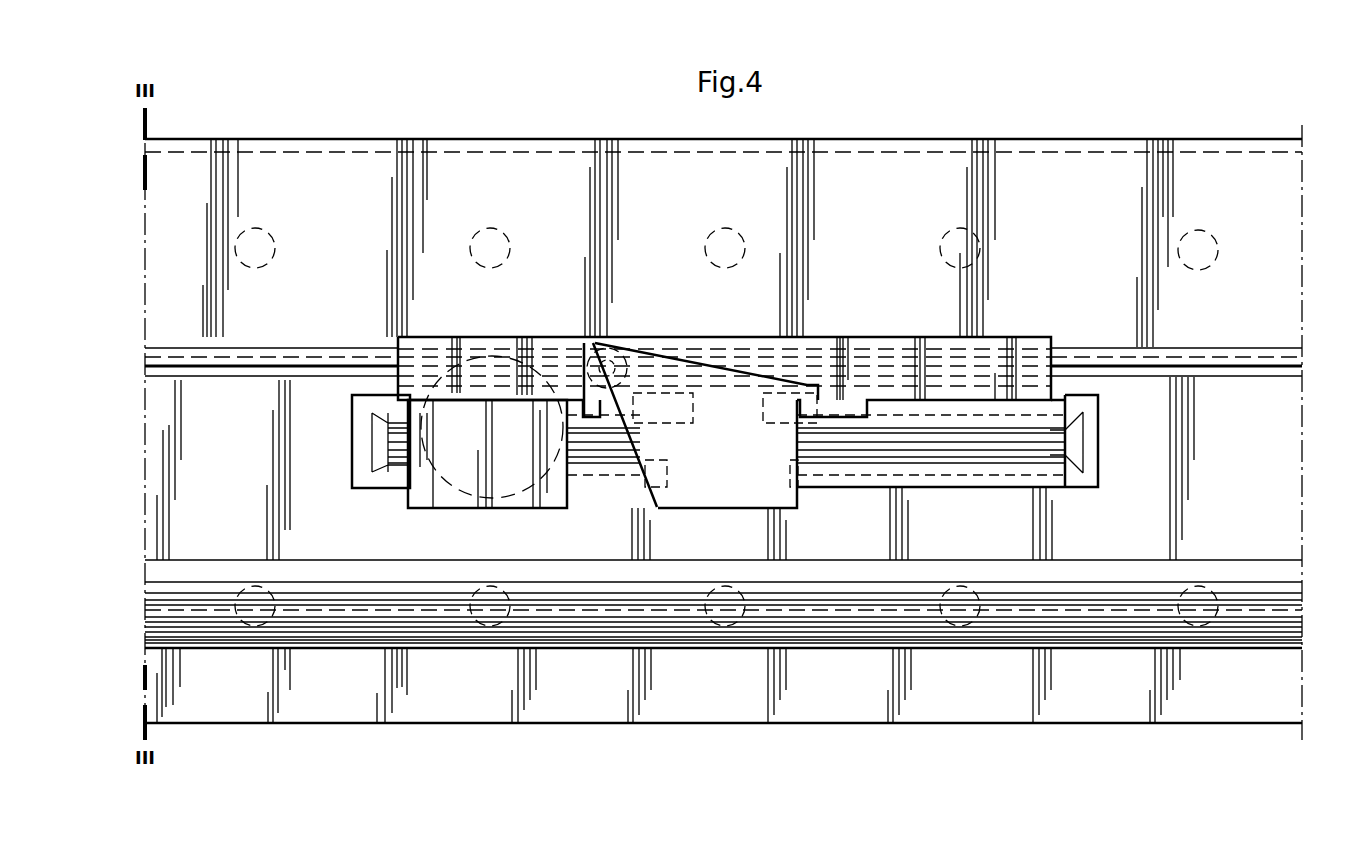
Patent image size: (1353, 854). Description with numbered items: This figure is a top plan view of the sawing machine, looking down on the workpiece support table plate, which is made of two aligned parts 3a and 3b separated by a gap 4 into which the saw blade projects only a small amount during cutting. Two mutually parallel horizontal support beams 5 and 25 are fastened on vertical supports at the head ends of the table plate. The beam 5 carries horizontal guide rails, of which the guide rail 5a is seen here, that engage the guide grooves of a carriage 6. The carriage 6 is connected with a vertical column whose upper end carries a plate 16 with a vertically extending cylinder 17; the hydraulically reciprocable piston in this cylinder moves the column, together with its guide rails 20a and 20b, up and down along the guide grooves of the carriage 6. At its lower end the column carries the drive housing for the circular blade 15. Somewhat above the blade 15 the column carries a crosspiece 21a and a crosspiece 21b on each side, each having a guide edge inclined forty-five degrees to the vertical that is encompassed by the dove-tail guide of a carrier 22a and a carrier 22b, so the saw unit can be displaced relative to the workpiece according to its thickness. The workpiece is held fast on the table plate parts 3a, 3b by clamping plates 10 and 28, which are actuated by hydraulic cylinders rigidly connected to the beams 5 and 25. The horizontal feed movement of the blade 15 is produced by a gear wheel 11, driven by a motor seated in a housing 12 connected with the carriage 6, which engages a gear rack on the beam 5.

The table plate part 3a is at (358, 182).
The table plate part 3b is at (335, 550).
The gap 4 is at (221, 372).
The horizontal support beam 5 is at (262, 167).
The horizontal guide rail 5a is at (1110, 357).
The carriage 6 is at (938, 368).
The clamping plate 10 is at (268, 240).
The gear wheel 11 is at (500, 487).
The housing 12 is at (434, 487).
The circular blade 15 is at (846, 362).
The plate 16 is at (720, 485).
The cylinder 17 is at (588, 345).
The guide rail 20a is at (648, 388).
The guide rail 20b is at (805, 385).
The crosspiece 21a is at (402, 442).
The crosspiece 21b is at (1048, 438).
The carrier 22a is at (395, 477).
The carrier 22b is at (1008, 480).
The horizontal support beam 25 is at (200, 640).
The clamping plate 28 is at (490, 627).